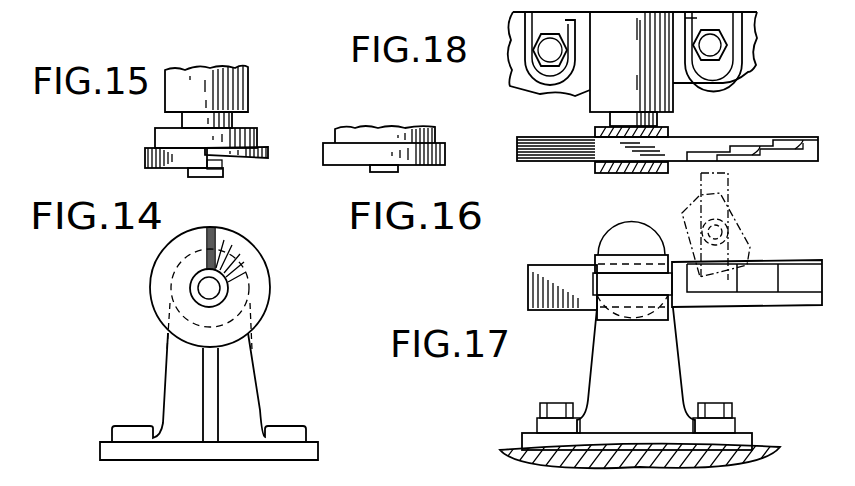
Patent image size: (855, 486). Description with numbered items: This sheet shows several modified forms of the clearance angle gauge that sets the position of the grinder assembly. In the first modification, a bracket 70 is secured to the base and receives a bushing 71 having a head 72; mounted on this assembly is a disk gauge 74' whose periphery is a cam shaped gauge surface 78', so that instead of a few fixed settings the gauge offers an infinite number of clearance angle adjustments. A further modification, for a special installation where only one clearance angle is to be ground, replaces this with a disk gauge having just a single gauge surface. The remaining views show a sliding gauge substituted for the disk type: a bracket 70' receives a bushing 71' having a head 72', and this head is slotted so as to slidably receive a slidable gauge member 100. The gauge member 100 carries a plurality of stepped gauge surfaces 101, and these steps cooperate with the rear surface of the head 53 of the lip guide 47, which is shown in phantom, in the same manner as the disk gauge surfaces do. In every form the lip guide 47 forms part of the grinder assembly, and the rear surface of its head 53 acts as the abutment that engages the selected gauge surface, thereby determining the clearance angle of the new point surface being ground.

In FIG. 14, the bracket 70 is at (209, 381).
In FIG. 16, the bracket 70' is at (640, 55).
In FIG. 17, the bracket 70' is at (640, 394).
In FIG. 15, the bushing 71 is at (232, 97).
In FIG. 16, the bushing 71' is at (603, 70).
In FIG. 15, the head 72 is at (232, 127).
In FIG. 16, the head 72' is at (610, 176).
In FIG. 17, the head 72' is at (609, 270).
In FIG. 15, the disk gauge 74' is at (153, 162).
In FIG. 14, the disk gauge 74' is at (237, 257).
In FIG. 15, the cam shaped gauge surface 78' is at (251, 167).
In FIG. 14, the cam shaped gauge surface 78' is at (234, 287).
In FIG. 16, the slidable gauge member 100 is at (564, 163).
In FIG. 17, the slidable gauge member 100 is at (528, 285).
In FIG. 16, the stepped gauge surfaces 101 is at (762, 163).
In FIG. 17, the stepped gauge surfaces 101 is at (758, 268).
In FIG. 17, the lip guide 47 is at (692, 196).
In FIG. 17, the head 53 is at (730, 223).